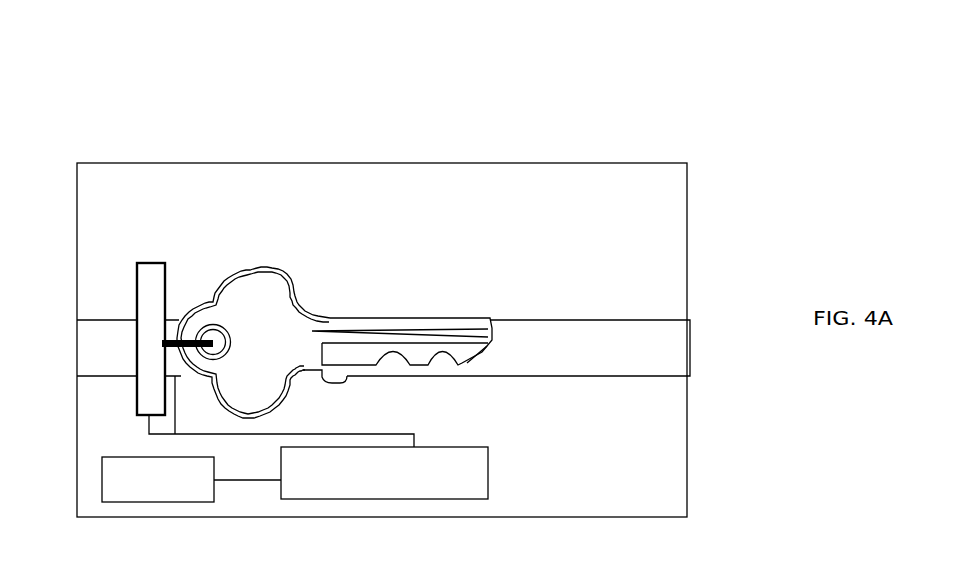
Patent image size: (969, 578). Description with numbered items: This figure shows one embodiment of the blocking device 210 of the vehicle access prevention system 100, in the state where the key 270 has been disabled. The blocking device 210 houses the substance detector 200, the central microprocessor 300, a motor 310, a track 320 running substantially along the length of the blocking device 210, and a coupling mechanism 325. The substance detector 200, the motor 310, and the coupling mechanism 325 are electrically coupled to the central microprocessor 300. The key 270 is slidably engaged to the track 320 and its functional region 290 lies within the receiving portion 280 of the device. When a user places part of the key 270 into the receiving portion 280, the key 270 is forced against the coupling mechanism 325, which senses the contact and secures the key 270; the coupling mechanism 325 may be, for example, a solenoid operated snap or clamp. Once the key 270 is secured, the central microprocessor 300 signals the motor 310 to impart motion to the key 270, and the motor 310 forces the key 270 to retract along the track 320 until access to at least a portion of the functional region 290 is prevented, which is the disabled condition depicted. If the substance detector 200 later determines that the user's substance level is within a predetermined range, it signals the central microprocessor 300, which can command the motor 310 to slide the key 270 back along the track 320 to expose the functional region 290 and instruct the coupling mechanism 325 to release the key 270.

The system 100 is at (275, 80).
The substance detector 200 is at (166, 505).
The blocking device 210 is at (102, 157).
The key 270 is at (262, 310).
The receiving portion 280 is at (670, 290).
The functional region 290 is at (470, 364).
The central microprocessor 300 is at (427, 499).
The motor 310 is at (147, 263).
The track 320 is at (98, 378).
The coupling mechanism 325 is at (212, 325).